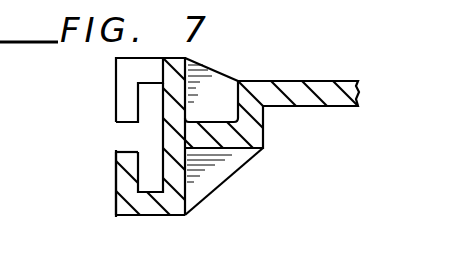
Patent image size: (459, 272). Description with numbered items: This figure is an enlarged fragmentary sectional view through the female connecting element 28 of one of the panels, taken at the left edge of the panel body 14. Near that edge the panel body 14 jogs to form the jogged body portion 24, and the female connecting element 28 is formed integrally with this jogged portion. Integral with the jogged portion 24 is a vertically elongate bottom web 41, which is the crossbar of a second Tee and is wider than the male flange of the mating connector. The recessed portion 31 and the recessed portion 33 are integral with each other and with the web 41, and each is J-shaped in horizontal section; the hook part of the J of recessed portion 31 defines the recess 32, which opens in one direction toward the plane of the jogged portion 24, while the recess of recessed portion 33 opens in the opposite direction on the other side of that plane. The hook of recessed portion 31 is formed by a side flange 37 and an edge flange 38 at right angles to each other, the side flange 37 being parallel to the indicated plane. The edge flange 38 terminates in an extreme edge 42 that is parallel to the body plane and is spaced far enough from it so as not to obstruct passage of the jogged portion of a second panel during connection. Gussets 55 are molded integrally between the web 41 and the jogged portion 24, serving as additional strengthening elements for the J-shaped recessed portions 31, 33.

The flat body 14 is at (313, 84).
The jogged body portion 24 is at (230, 150).
The female connecting element 28 is at (96, 114).
The recessed portion 31 is at (116, 174).
The recess 32 is at (118, 196).
The recessed portion 33 is at (116, 70).
The side flange 37 is at (160, 216).
The edge flange 38 is at (116, 157).
The bottom web 41 is at (187, 97).
The extreme edge 42 is at (127, 152).
The gusset 55 is at (205, 68).